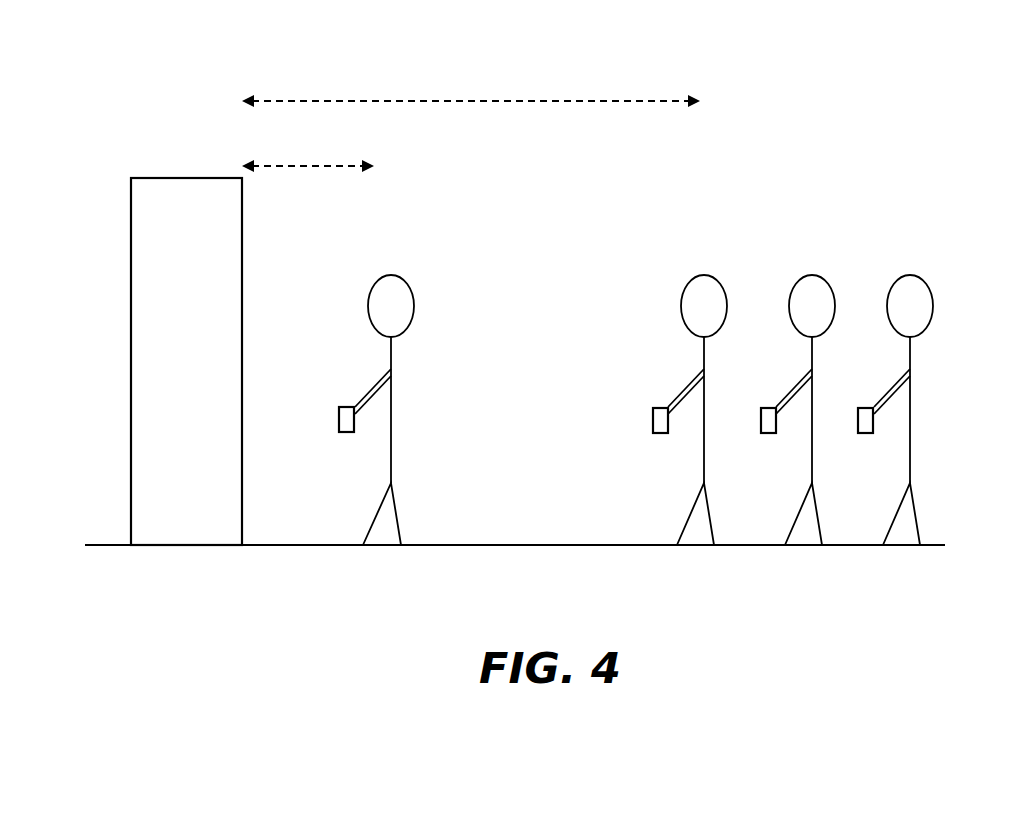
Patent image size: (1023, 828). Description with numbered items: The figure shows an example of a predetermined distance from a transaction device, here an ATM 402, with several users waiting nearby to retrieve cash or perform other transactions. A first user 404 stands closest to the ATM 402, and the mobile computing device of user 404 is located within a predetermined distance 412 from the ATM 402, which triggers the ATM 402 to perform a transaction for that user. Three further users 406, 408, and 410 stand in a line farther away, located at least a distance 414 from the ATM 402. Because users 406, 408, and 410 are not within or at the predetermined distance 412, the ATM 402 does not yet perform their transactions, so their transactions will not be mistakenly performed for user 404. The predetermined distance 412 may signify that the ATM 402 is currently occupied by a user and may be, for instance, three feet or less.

The ATM 402 is at (186, 361).
The user 404 is at (376, 388).
The user 406 is at (690, 388).
The user 408 is at (798, 388).
The user 410 is at (895, 388).
The predetermined distance 412 is at (308, 149).
The distance 414 is at (471, 83).